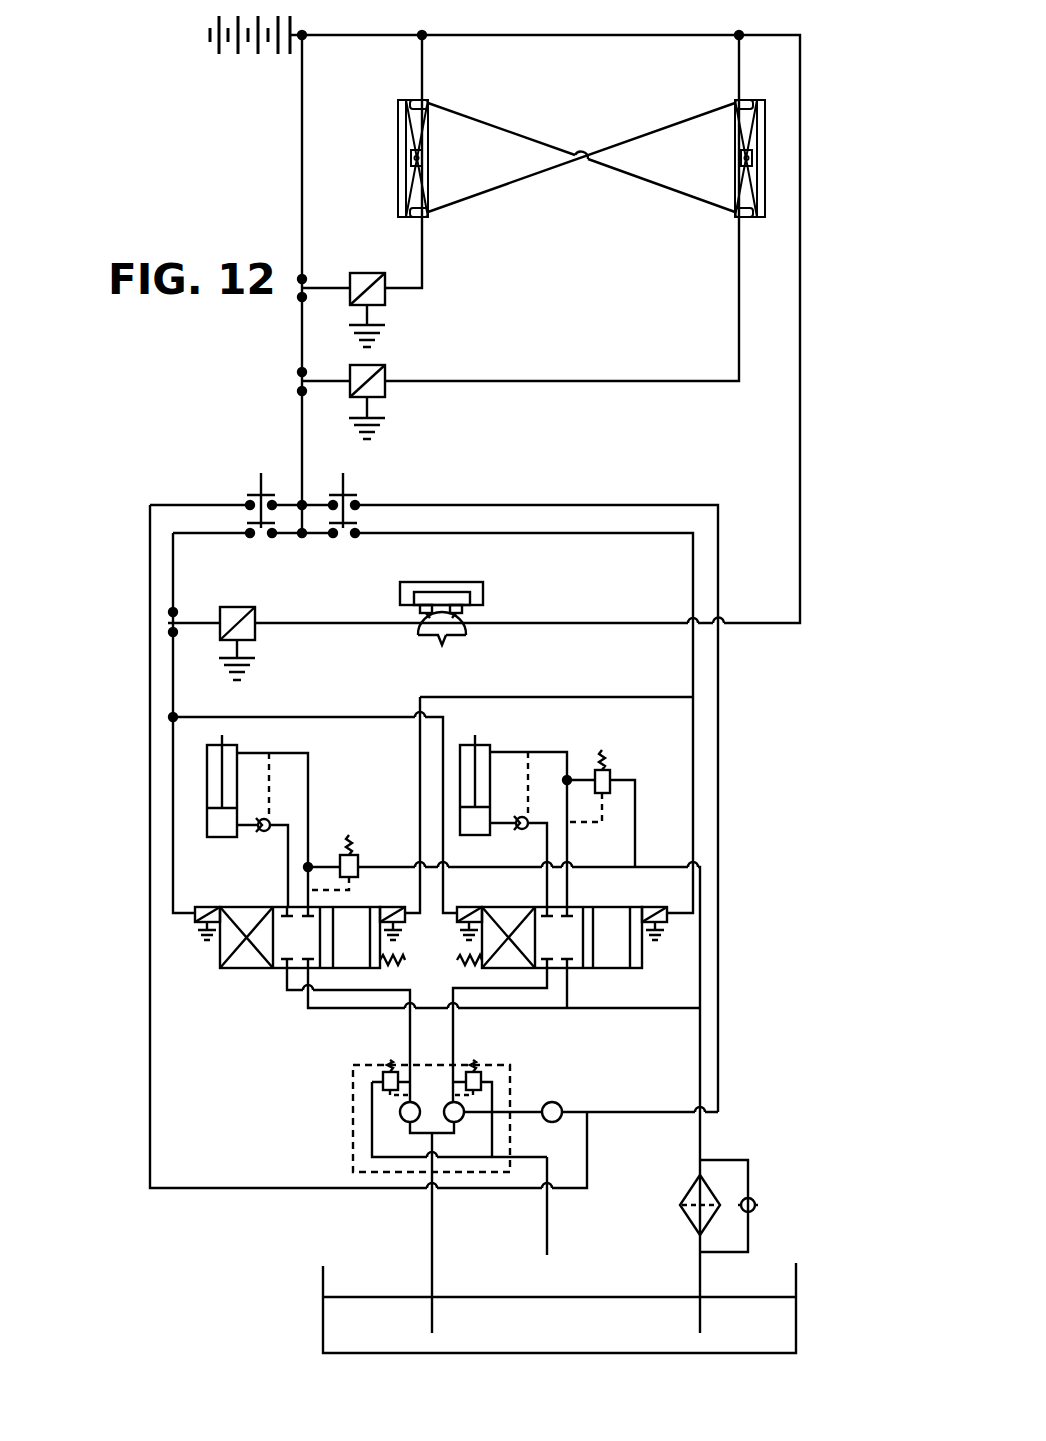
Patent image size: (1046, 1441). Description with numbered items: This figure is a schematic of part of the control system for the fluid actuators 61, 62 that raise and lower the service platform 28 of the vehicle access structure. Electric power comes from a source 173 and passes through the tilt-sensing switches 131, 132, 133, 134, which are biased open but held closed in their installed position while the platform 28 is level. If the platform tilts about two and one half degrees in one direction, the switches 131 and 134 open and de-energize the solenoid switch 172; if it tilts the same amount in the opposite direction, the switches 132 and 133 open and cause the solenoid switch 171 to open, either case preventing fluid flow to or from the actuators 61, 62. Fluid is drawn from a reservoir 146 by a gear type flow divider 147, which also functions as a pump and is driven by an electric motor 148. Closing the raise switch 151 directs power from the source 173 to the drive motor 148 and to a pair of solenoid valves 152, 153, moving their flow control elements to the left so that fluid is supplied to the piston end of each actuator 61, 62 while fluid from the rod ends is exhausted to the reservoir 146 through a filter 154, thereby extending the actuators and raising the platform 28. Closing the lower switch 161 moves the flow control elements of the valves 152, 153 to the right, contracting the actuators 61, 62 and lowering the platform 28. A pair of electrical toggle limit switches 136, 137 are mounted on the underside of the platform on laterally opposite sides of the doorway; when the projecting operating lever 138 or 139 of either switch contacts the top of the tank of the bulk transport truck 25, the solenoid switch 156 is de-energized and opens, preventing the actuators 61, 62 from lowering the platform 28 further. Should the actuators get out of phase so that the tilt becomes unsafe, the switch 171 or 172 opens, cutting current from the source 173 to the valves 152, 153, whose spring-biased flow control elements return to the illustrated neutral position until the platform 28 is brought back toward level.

The source 173 is at (290, 24).
The switch 131 is at (430, 104).
The switch 132 is at (733, 104).
The switch 133 is at (430, 213).
The switch 134 is at (733, 213).
The solenoid switch 171 is at (352, 273).
The solenoid switch 172 is at (383, 365).
The lower switch 161 is at (259, 485).
The raise switch 151 is at (345, 483).
The solenoid switch 156 is at (250, 607).
The bulk transport truck 25 is at (426, 590).
The platform 28 is at (458, 590).
The electrical toggle limit switch 136 is at (422, 606).
The electrical toggle limit switch 137 is at (461, 606).
The projecting operating lever 138 is at (424, 618).
The projecting operating lever 139 is at (461, 618).
The fluid actuator 61 is at (207, 798).
The fluid actuator 62 is at (460, 772).
The solenoid valve 152 is at (259, 907).
The solenoid valve 153 is at (521, 907).
The gear type flow divider 147 is at (353, 1128).
The electric motor 148 is at (556, 1102).
The filter 154 is at (690, 1222).
The reservoir 146 is at (323, 1275).